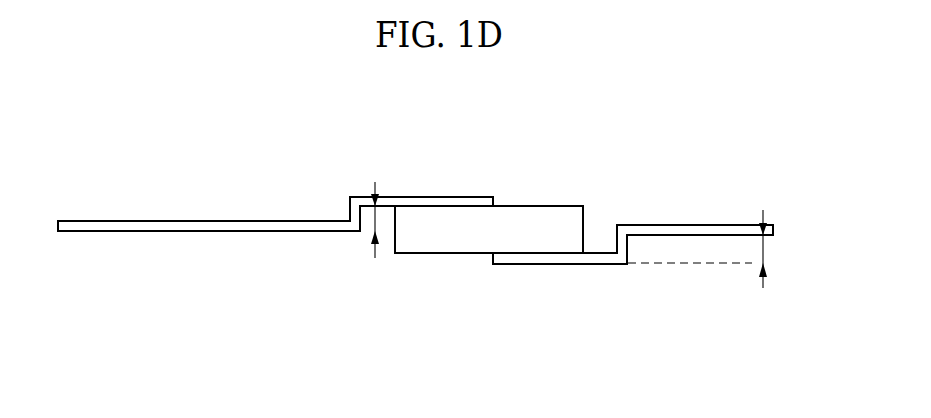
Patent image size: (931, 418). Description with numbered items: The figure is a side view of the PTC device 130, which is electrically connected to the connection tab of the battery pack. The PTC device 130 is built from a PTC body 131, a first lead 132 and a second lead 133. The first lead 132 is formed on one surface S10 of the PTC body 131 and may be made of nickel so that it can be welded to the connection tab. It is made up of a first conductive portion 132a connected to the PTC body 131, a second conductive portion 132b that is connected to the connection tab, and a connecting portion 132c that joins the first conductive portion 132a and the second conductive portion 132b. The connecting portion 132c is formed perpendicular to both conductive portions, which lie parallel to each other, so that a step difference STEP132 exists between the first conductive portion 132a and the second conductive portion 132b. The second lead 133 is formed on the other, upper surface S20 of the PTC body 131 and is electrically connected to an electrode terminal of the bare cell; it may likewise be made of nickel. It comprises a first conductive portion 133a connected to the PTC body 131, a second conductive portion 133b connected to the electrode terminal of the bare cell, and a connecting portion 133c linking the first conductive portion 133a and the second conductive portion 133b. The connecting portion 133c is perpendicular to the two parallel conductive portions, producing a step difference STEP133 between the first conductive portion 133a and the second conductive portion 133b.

The PTC device 130 is at (67, 130).
The PTC body 131 is at (527, 222).
The first lead 132 is at (745, 326).
The first conductive portion 132a is at (582, 257).
The second conductive portion 132b is at (740, 236).
The connecting portion 132c is at (628, 248).
The second lead 133 is at (405, 136).
The first conductive portion 133a is at (396, 197).
The second conductive portion 133b is at (239, 221).
The connecting portion 133c is at (347, 213).
The one surface S10 is at (443, 254).
The upper surface S20 is at (567, 206).
The step difference STEP133 is at (377, 217).
The step difference STEP132 is at (744, 249).